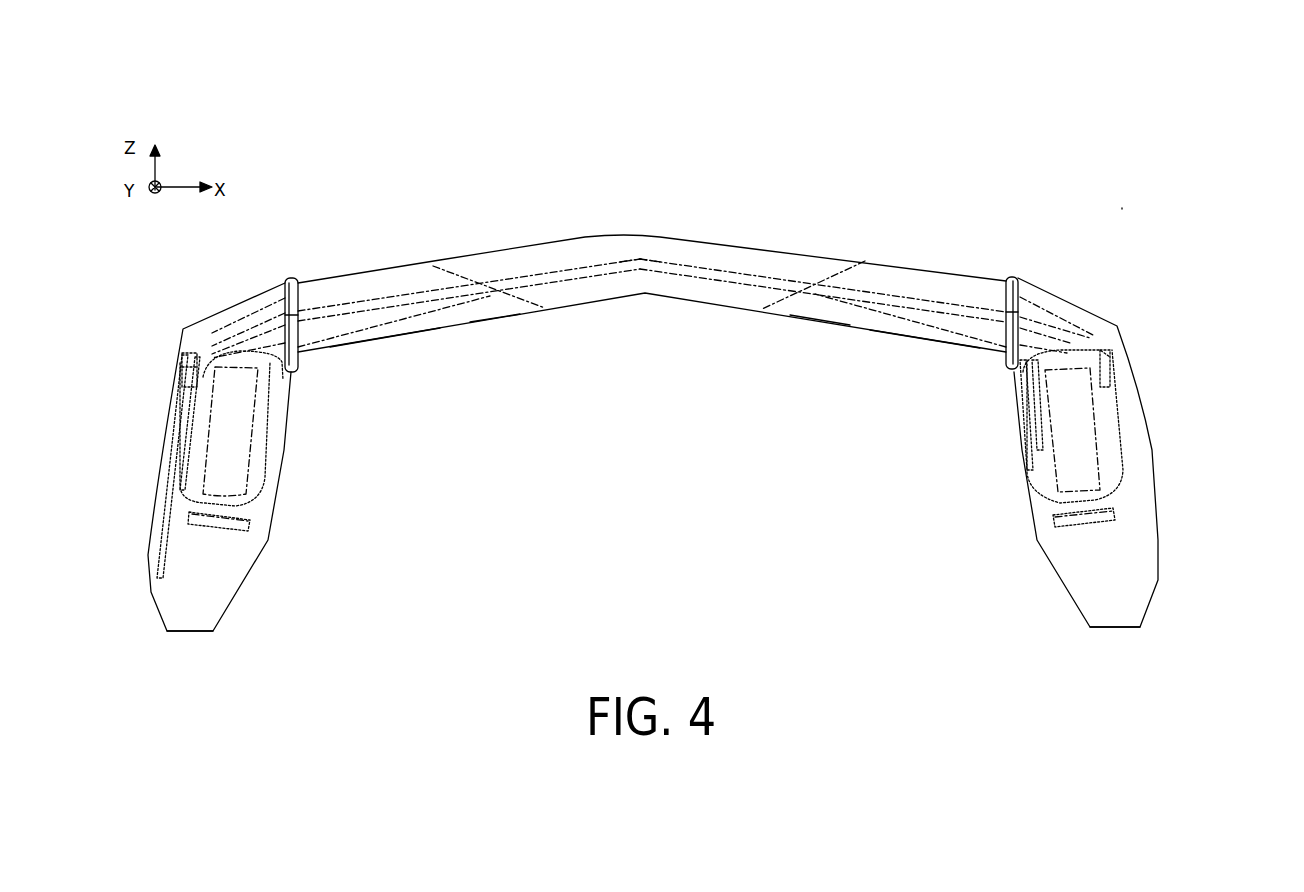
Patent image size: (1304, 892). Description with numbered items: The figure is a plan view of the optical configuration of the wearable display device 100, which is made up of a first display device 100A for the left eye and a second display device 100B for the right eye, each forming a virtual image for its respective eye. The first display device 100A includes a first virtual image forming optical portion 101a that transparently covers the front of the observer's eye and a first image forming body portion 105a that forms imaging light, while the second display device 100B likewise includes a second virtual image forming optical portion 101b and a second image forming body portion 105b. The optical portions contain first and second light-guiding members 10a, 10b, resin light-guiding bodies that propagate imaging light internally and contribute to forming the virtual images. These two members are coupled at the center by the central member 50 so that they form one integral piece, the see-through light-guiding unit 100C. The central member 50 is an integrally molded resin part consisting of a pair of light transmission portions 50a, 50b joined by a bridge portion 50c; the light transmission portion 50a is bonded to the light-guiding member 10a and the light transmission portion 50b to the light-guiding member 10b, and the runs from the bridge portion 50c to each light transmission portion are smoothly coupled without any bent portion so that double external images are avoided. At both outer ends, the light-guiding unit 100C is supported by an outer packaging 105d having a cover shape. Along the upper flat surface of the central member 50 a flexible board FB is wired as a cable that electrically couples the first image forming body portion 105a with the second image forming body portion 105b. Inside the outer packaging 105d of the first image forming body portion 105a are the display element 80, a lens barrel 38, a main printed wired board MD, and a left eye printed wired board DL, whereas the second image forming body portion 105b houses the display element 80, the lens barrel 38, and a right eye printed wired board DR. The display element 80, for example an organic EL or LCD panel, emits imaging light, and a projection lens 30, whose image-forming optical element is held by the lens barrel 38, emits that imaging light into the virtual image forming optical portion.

The wearable display device 100 is at (1127, 205).
The first display device 100A is at (325, 245).
The second display device 100B is at (1024, 236).
The see-through light-guiding unit 100C is at (722, 250).
The first light-guiding member 10a is at (391, 337).
The second light-guiding member 10b is at (930, 337).
The first virtual image forming optical portion 101a is at (487, 313).
The second virtual image forming optical portion 101b is at (817, 318).
The central member 50 is at (748, 378).
The light transmission portion 50a is at (570, 302).
The light transmission portion 50b is at (718, 302).
The bridge portion 50c is at (650, 285).
The flexible board FB is at (391, 330).
The projection lens 30 is at (702, 428).
The lens barrel 38 is at (273, 415).
The main printed wired board MD is at (177, 413).
The left eye printed wired board DL is at (250, 443).
The right eye printed wired board DR is at (1047, 437).
The display element 80 is at (187, 517).
The first image forming body portion 105a is at (237, 568).
The second image forming body portion 105b is at (1063, 567).
The outer packaging 105d is at (172, 598).